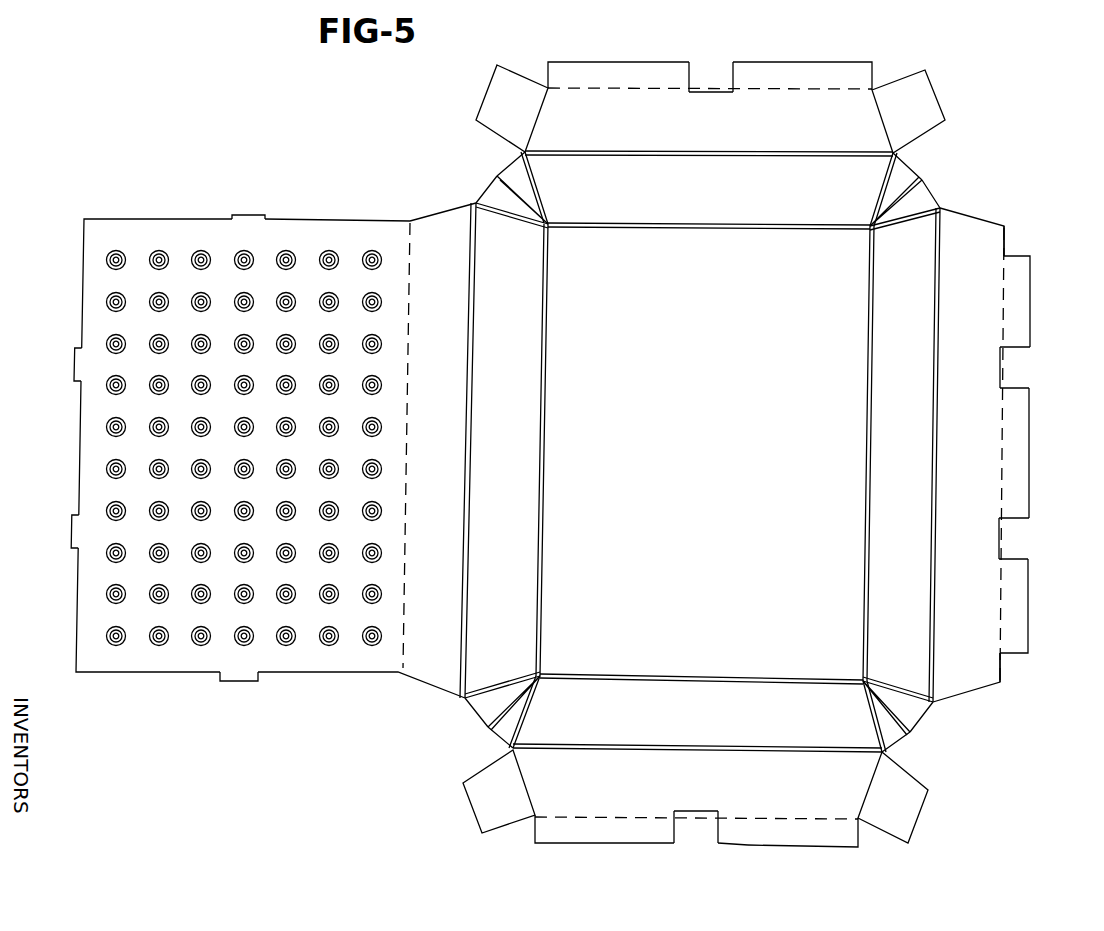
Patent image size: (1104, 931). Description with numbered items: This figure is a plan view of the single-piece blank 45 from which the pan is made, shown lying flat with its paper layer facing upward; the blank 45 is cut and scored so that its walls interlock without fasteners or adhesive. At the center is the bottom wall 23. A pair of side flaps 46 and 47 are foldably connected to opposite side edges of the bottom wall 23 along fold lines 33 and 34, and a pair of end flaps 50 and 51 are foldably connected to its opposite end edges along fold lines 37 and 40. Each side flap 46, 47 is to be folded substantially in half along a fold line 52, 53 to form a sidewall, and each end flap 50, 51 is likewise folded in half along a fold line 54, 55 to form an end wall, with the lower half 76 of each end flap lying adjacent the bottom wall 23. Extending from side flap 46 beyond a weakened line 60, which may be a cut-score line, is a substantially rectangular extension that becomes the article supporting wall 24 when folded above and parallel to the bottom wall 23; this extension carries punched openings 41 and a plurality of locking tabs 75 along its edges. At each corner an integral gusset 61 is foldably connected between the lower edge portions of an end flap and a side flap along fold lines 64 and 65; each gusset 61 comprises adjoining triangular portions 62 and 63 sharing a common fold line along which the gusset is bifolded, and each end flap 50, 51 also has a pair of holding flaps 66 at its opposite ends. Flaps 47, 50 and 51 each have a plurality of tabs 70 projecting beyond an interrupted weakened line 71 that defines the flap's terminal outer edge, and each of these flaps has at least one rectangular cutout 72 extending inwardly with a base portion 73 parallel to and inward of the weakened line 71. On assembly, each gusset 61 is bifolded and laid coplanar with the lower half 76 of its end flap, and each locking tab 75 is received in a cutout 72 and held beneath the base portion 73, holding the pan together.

The bottom wall 23 is at (690, 463).
The article supporting wall 24 is at (150, 228).
The fold line 33 is at (547, 425).
The fold line 34 is at (866, 413).
The fold line 37 is at (665, 675).
The fold line 40 is at (700, 225).
The openings 41 is at (157, 646).
The blank 45 is at (312, 160).
The side flap 46 is at (447, 192).
The side flap 47 is at (973, 184).
The end flap 50 is at (449, 751).
The end flap 51 is at (474, 128).
The fold line 52 is at (473, 502).
The fold line 53 is at (938, 477).
The fold line 54 is at (615, 748).
The fold line 55 is at (675, 153).
The weakened line 60 is at (405, 437).
The integral gusset 61 is at (503, 162).
The triangular portion 62 is at (528, 200).
The triangular portion 63 is at (497, 197).
The fold line 64 is at (537, 185).
The fold line 65 is at (510, 215).
The holding flap 66 is at (497, 92).
The tab 70 is at (742, 65).
The interrupted weakened line 71 is at (790, 90).
The rectangular cutout 72 is at (687, 75).
The base portion 73 is at (707, 88).
The locking tab 75 is at (247, 218).
The lower half 76 is at (780, 212).